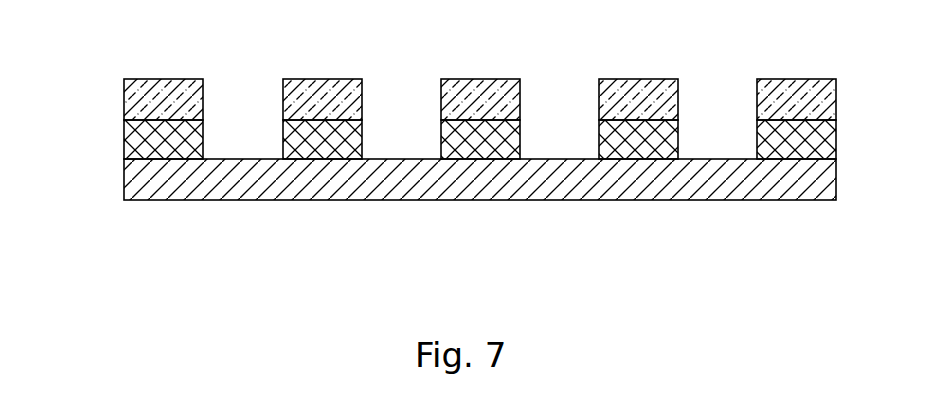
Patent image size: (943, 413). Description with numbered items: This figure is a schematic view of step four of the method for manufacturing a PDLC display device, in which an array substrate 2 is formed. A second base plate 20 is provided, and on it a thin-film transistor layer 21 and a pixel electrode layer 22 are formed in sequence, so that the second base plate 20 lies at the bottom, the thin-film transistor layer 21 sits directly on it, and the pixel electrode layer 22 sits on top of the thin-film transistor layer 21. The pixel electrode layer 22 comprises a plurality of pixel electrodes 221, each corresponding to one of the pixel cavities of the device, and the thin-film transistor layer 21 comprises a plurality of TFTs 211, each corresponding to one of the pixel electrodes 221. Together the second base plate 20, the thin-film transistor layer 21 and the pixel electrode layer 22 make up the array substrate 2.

The array substrate 2 is at (466, 142).
The second base plate 20 is at (793, 183).
The thin-film transistor layer 21 is at (435, 91).
The TFT 211 is at (483, 140).
The pixel electrode layer 22 is at (435, 71).
The pixel electrode 221 is at (321, 107).